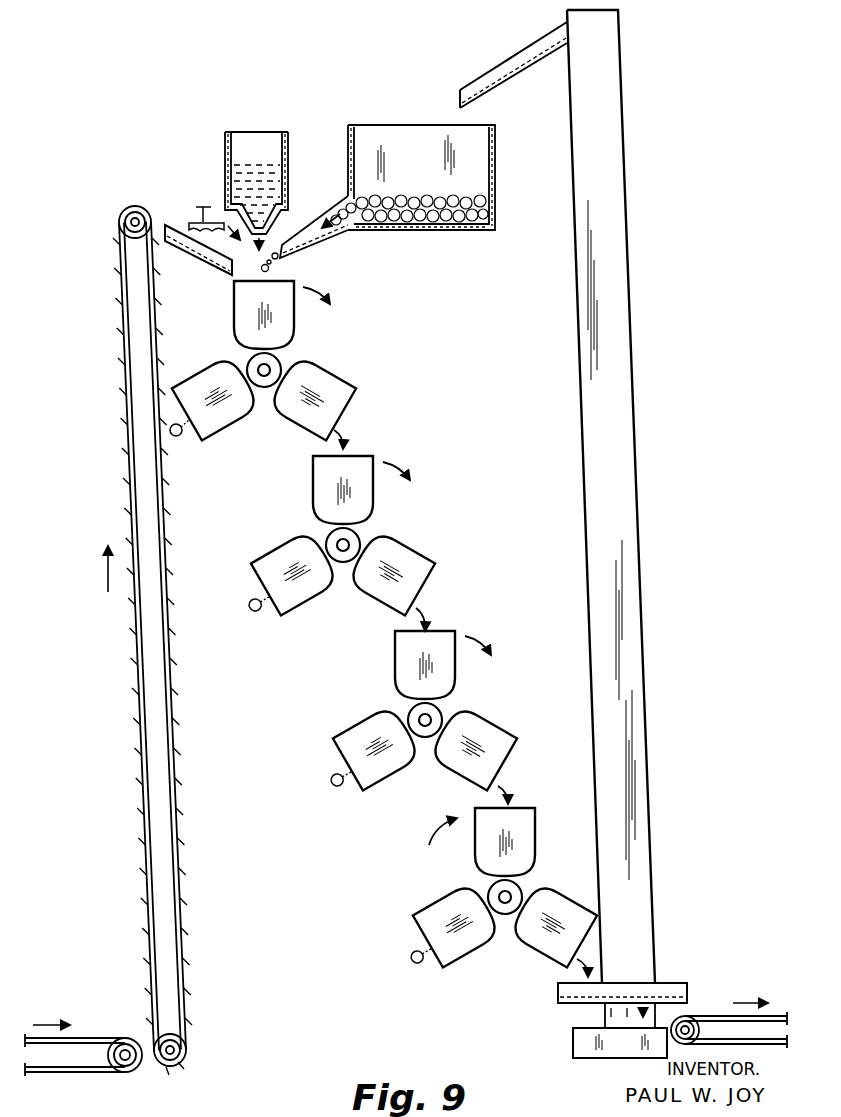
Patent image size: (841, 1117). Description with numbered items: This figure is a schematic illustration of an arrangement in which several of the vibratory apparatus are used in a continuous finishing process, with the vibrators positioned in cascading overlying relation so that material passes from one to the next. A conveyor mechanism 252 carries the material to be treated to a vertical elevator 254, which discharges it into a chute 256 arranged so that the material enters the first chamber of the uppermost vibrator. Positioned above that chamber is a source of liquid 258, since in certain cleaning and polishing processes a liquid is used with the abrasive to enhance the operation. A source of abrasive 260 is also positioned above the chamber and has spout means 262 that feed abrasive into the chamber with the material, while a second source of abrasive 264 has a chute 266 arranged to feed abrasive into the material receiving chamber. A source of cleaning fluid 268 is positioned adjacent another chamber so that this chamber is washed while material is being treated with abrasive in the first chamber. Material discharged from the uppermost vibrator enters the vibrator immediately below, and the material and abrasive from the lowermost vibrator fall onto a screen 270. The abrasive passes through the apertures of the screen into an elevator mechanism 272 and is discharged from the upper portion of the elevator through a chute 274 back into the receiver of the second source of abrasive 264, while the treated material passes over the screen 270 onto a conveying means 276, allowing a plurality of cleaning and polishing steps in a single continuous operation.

The conveyor mechanism 252 is at (97, 1073).
The vertical elevator 254 is at (186, 955).
The chute 256 is at (222, 271).
The source of liquid 258 is at (204, 206).
The source of abrasive 260 is at (249, 123).
The spout means 262 is at (273, 226).
The second source of abrasive 264 is at (431, 133).
The chute 266 is at (312, 252).
The source of cleaning fluid 268 is at (177, 437).
The screen 270 is at (672, 983).
The elevator mechanism 272 is at (656, 800).
The chute 274 is at (480, 78).
The conveying means 276 is at (717, 1013).